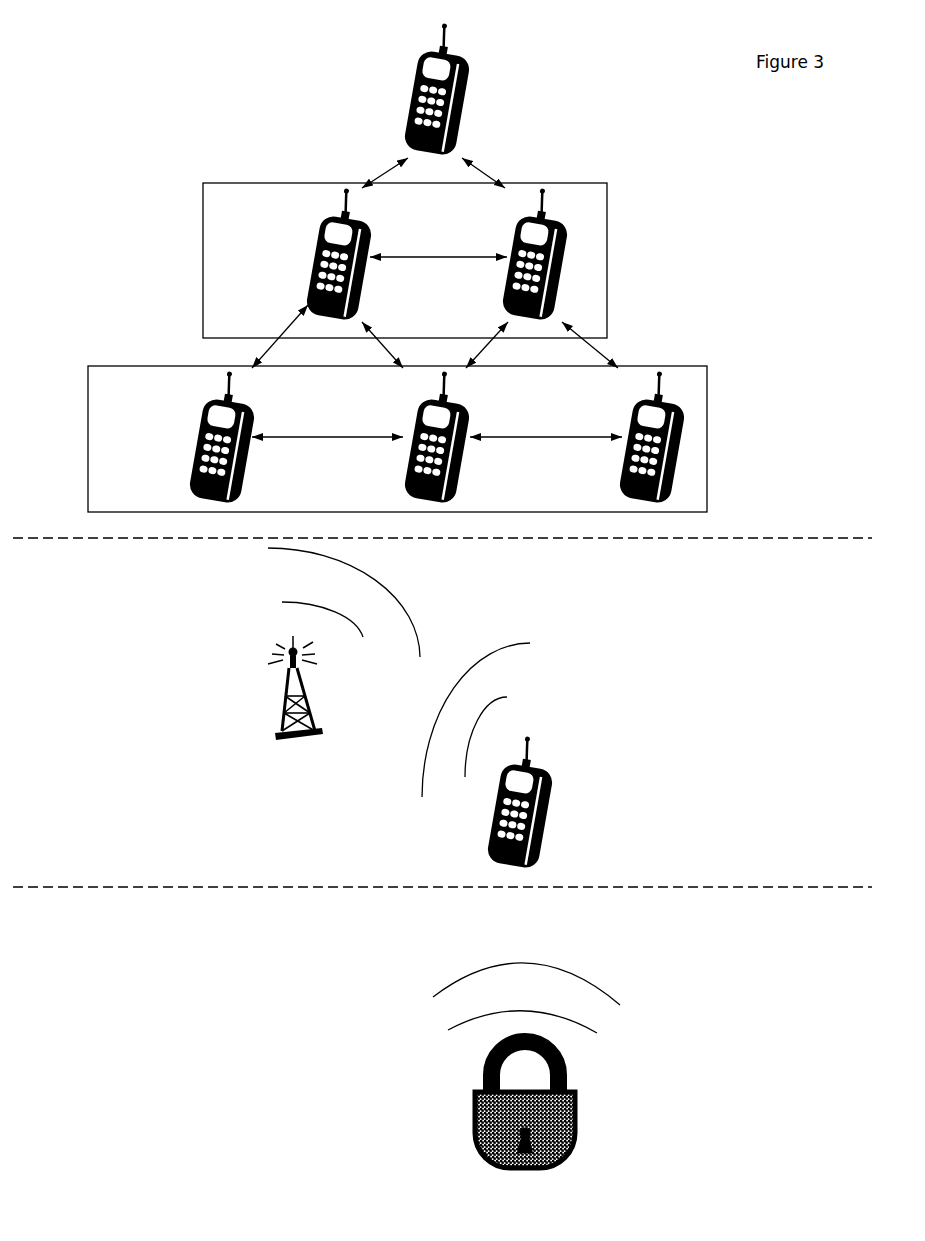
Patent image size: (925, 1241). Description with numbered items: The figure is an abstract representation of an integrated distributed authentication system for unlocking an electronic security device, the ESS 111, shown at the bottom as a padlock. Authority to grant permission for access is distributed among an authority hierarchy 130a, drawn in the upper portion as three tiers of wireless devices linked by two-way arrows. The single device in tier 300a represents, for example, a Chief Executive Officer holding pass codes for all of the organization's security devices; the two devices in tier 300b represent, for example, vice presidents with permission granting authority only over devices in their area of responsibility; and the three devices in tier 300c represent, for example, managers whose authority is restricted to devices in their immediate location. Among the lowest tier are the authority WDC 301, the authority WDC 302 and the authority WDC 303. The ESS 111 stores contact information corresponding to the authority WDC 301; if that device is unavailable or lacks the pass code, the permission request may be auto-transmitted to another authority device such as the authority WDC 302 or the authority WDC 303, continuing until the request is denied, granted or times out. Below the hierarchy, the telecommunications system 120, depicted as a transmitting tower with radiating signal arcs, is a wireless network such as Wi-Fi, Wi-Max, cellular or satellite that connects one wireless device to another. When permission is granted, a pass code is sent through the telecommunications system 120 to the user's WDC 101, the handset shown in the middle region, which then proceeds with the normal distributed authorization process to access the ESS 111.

The authority hierarchy 130a is at (230, 149).
The tier 300a is at (543, 86).
The tier 300b is at (612, 260).
The tier 300c is at (712, 438).
The authority WDC 301 is at (195, 437).
The authority WDC 302 is at (310, 264).
The authority WDC 303 is at (410, 462).
The telecommunications system 120 is at (268, 694).
The WDC 101 is at (551, 820).
The ESS 111 is at (585, 1100).